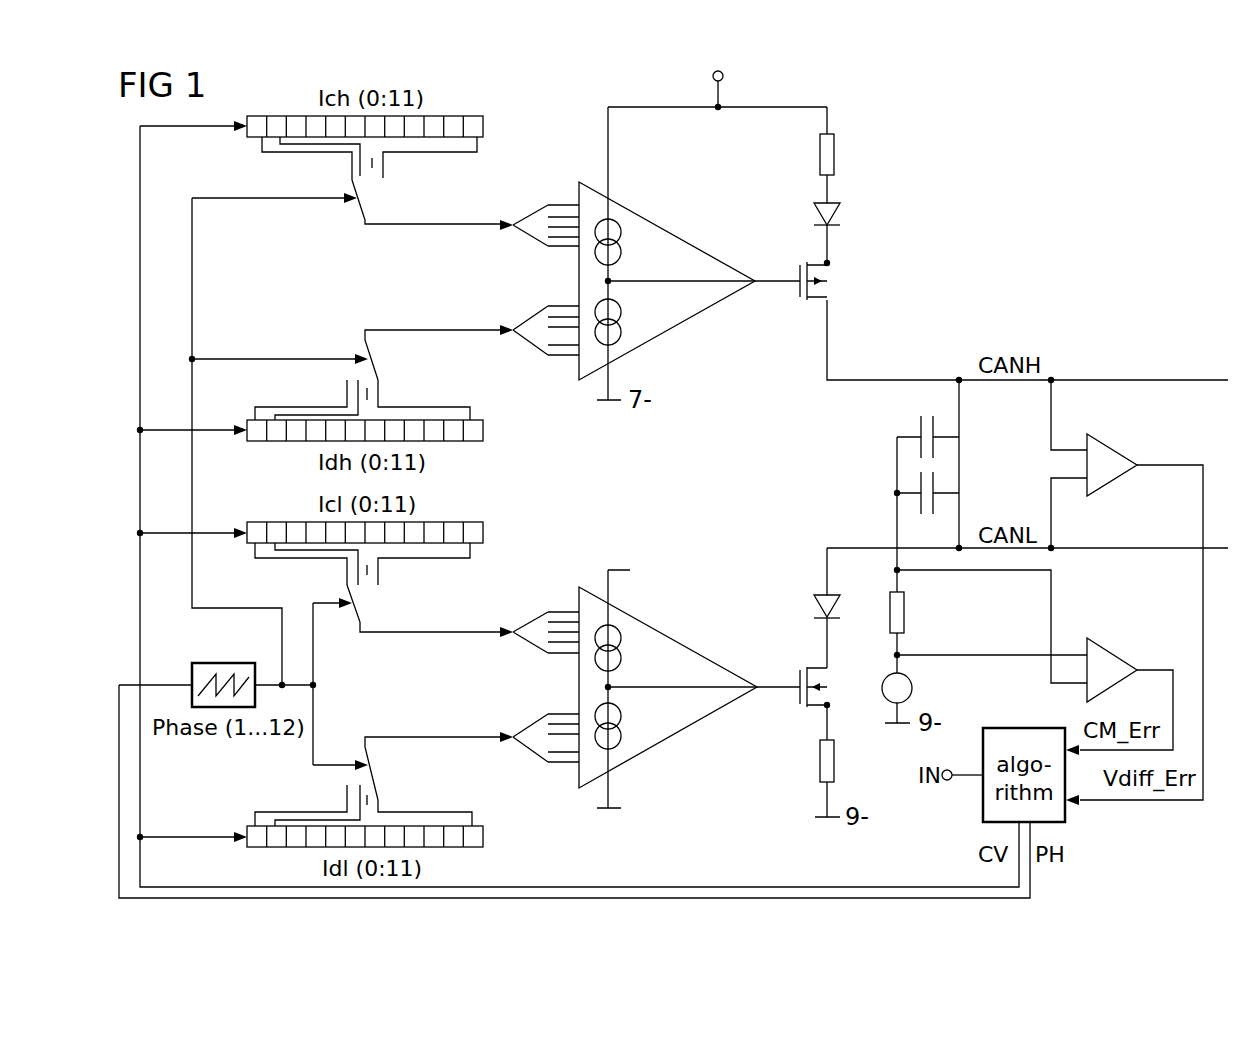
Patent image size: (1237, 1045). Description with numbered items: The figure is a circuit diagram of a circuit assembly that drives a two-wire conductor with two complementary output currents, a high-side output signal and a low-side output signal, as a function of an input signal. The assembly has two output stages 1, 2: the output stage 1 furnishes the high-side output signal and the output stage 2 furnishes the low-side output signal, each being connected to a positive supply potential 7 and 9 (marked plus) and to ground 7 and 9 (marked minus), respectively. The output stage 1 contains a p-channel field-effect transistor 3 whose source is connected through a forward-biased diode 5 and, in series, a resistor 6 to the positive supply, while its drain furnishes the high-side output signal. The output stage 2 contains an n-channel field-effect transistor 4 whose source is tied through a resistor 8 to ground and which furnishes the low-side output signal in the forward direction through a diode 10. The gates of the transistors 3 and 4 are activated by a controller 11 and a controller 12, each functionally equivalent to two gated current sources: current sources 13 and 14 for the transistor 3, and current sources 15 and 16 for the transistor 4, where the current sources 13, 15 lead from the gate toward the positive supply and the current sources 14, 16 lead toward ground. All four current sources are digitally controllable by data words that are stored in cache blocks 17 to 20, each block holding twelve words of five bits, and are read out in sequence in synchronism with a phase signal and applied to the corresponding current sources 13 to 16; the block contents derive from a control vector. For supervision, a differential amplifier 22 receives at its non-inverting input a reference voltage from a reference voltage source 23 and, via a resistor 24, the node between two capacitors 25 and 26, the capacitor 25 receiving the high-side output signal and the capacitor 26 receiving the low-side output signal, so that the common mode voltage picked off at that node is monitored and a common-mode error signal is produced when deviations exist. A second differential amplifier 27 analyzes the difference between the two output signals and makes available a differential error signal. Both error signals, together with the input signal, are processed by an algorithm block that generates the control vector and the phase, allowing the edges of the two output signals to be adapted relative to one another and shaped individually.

The output stage 1 is at (870, 178).
The output stage 2 is at (750, 562).
The field-effect transistor 3 is at (798, 271).
The field-effect transistor 4 is at (798, 677).
The diode 5 is at (814, 213).
The resistor 6 is at (820, 155).
The supply potential 7 is at (717, 87).
The resistor 8 is at (820, 761).
The supply potential 9 is at (634, 689).
The diode 10 is at (814, 604).
The controller 11 is at (668, 333).
The controller 12 is at (668, 740).
The current source 13 is at (621, 236).
The current source 14 is at (621, 324).
The current source 15 is at (621, 642).
The current source 16 is at (621, 730).
The cache block 17 is at (485, 130).
The cache block 18 is at (485, 433).
The cache block 19 is at (485, 535).
The cache block 20 is at (485, 838).
The differential amplifier 22 is at (1118, 660).
The reference voltage source 23 is at (913, 690).
The resistor 24 is at (906, 615).
The capacitor 25 is at (918, 430).
The capacitor 26 is at (936, 488).
The differential amplifier 27 is at (1118, 455).